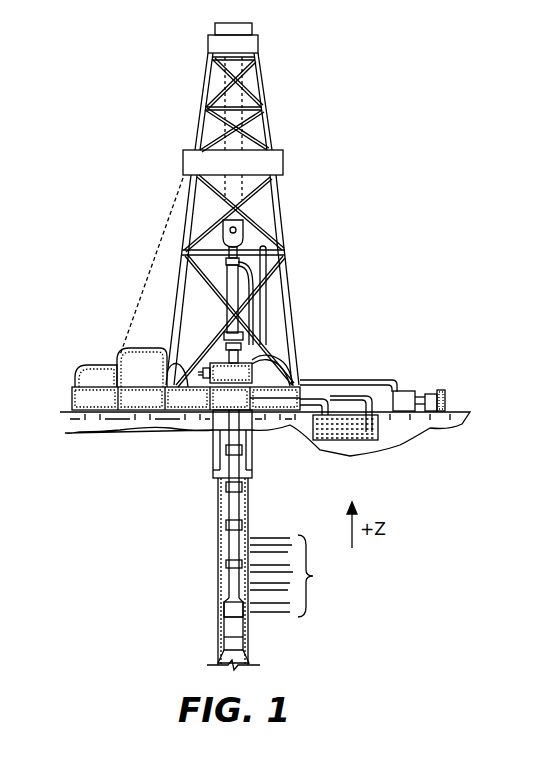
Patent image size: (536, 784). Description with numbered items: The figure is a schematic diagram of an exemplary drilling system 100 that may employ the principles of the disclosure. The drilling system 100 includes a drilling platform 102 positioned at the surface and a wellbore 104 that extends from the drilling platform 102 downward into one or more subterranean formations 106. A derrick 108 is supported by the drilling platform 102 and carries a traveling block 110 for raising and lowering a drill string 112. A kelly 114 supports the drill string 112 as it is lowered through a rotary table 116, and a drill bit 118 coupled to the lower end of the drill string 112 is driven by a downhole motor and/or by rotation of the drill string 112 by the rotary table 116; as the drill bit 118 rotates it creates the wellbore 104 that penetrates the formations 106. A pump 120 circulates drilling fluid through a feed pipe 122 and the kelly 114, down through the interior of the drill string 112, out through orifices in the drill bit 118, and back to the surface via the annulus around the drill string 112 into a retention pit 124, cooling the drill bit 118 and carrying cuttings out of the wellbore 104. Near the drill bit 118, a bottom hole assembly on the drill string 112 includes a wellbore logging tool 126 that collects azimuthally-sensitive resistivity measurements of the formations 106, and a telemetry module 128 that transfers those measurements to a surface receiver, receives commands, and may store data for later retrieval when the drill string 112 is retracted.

The drilling system 100 is at (376, 155).
The drilling platform 102 is at (72, 396).
The wellbore 104 is at (249, 507).
The subterranean formations 106 is at (305, 576).
The derrick 108 is at (257, 92).
The traveling block 110 is at (243, 230).
The drill string 112 is at (240, 490).
The kelly 114 is at (243, 293).
The rotary table 116 is at (258, 358).
The drill bit 118 is at (249, 660).
The pump 120 is at (410, 392).
The feed pipe 122 is at (372, 380).
The retention pit 124 is at (340, 441).
The wellbore logging tool 126 is at (224, 630).
The telemetry module 128 is at (224, 610).